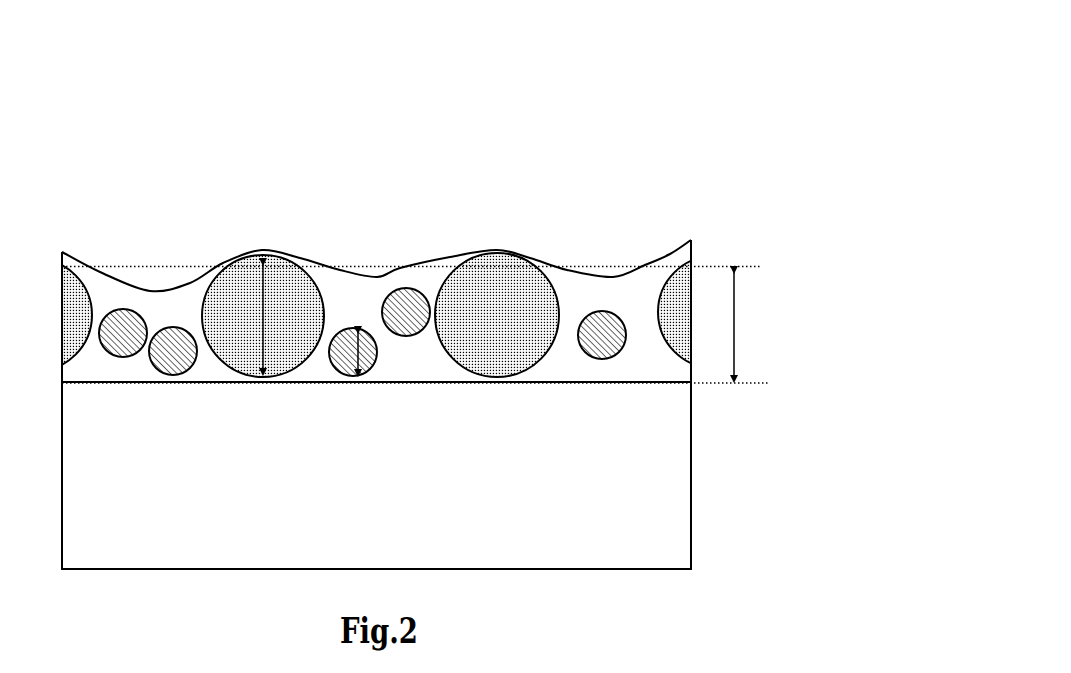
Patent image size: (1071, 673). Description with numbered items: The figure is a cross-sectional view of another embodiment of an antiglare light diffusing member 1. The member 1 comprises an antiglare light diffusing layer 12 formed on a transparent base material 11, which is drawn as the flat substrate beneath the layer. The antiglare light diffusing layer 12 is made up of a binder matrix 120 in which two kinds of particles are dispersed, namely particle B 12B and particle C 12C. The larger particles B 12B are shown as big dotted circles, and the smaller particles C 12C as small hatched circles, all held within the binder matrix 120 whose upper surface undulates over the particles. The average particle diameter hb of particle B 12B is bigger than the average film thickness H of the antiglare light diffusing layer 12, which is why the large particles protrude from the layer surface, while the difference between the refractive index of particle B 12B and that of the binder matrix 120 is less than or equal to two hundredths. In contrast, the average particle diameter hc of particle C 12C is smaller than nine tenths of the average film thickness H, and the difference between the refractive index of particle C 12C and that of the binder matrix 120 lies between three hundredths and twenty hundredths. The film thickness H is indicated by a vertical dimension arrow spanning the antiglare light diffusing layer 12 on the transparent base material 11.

The antiglare light diffusing member 1 is at (443, 288).
The transparent base material 11 is at (645, 457).
The antiglare light diffusing layer 12 is at (443, 253).
The particle B 12B is at (287, 313).
The particle C 12C is at (355, 325).
The binder matrix 120 is at (580, 290).
The average particle diameter of particle B hb is at (238, 317).
The average particle diameter of particle C hc is at (384, 351).
The average film thickness H is at (419, 325).